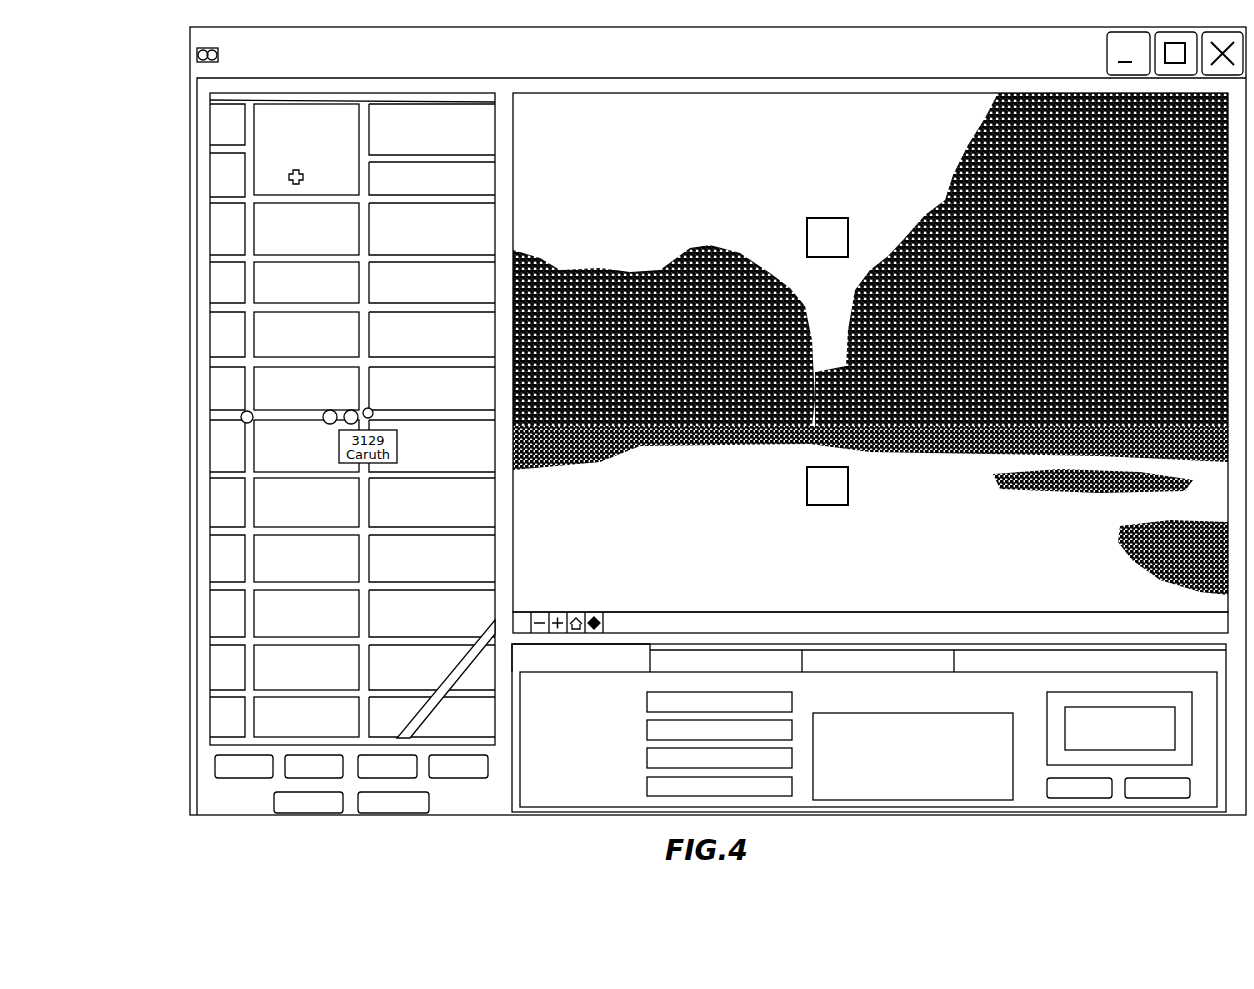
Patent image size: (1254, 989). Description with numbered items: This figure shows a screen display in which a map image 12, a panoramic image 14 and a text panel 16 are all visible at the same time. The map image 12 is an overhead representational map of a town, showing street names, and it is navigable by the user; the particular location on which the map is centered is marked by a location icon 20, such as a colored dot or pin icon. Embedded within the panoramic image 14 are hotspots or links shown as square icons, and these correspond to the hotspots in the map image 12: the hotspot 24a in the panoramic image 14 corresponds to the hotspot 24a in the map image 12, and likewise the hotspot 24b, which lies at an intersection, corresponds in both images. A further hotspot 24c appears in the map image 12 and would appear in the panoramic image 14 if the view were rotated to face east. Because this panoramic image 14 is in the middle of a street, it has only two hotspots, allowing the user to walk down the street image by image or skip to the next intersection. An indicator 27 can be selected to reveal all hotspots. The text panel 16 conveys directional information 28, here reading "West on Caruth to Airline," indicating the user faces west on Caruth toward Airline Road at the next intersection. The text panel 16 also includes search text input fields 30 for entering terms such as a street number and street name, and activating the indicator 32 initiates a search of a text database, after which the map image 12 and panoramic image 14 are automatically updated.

The map image 12 is at (284, 147).
The panoramic image 14 is at (746, 131).
The text panel 16 is at (869, 748).
The location icon 20 is at (356, 410).
The hotspot 24a is at (325, 423).
The hotspot 24b is at (245, 413).
The hotspot 24c is at (371, 411).
The indicator 27 is at (583, 613).
The directional information 28 is at (665, 607).
The search text input fields 30 is at (768, 701).
The indicator 32 is at (1097, 798).